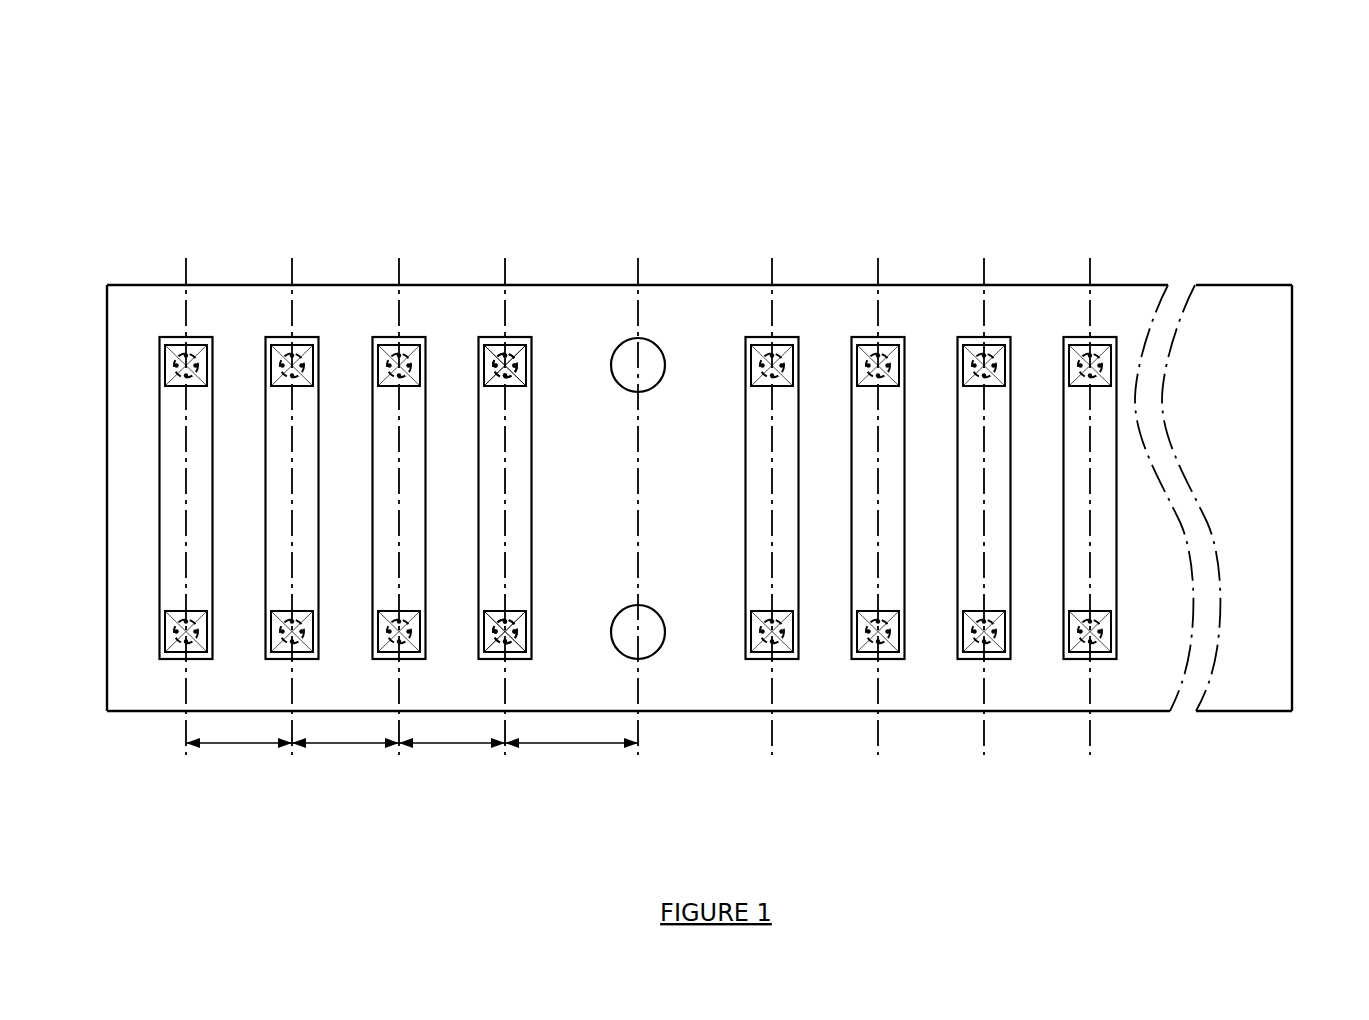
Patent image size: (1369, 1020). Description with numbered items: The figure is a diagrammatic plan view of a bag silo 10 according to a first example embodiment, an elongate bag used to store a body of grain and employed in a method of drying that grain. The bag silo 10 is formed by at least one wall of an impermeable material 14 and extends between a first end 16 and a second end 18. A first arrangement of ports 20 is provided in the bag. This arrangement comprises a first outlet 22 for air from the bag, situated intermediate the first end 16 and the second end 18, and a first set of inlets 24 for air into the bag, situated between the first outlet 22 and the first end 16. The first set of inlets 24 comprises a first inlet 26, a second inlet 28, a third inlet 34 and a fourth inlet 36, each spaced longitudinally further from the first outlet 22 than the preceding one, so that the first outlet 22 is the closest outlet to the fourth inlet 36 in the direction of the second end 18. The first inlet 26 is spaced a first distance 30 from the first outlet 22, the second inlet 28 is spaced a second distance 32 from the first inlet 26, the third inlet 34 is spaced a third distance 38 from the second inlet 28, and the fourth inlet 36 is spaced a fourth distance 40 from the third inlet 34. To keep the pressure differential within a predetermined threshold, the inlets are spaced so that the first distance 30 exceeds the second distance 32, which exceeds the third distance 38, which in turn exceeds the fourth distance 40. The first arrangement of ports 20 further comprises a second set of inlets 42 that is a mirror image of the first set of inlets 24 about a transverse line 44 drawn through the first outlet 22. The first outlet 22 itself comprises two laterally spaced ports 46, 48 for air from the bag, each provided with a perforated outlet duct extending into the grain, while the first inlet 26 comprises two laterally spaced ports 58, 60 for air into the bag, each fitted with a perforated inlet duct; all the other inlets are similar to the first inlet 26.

The bag silo 10 is at (1177, 122).
The wall of an impermeable material 14 is at (1130, 292).
The first end 16 is at (106, 482).
The second end 18 is at (1292, 497).
The first arrangement of ports 20 is at (160, 818).
The first outlet 22 is at (665, 267).
The first set of inlets 24 is at (158, 233).
The first inlet 26 is at (527, 320).
The second inlet 28 is at (421, 320).
The first distance 30 is at (572, 743).
The second distance 32 is at (452, 743).
The third inlet 34 is at (313, 320).
The fourth inlet 36 is at (207, 320).
The third distance 38 is at (345, 743).
The fourth distance 40 is at (238, 743).
The second set of inlets 42 is at (745, 233).
The transverse line 44 is at (637, 262).
The port 46 is at (613, 379).
The port 48 is at (663, 617).
The port 58 is at (513, 358).
The port 60 is at (514, 629).